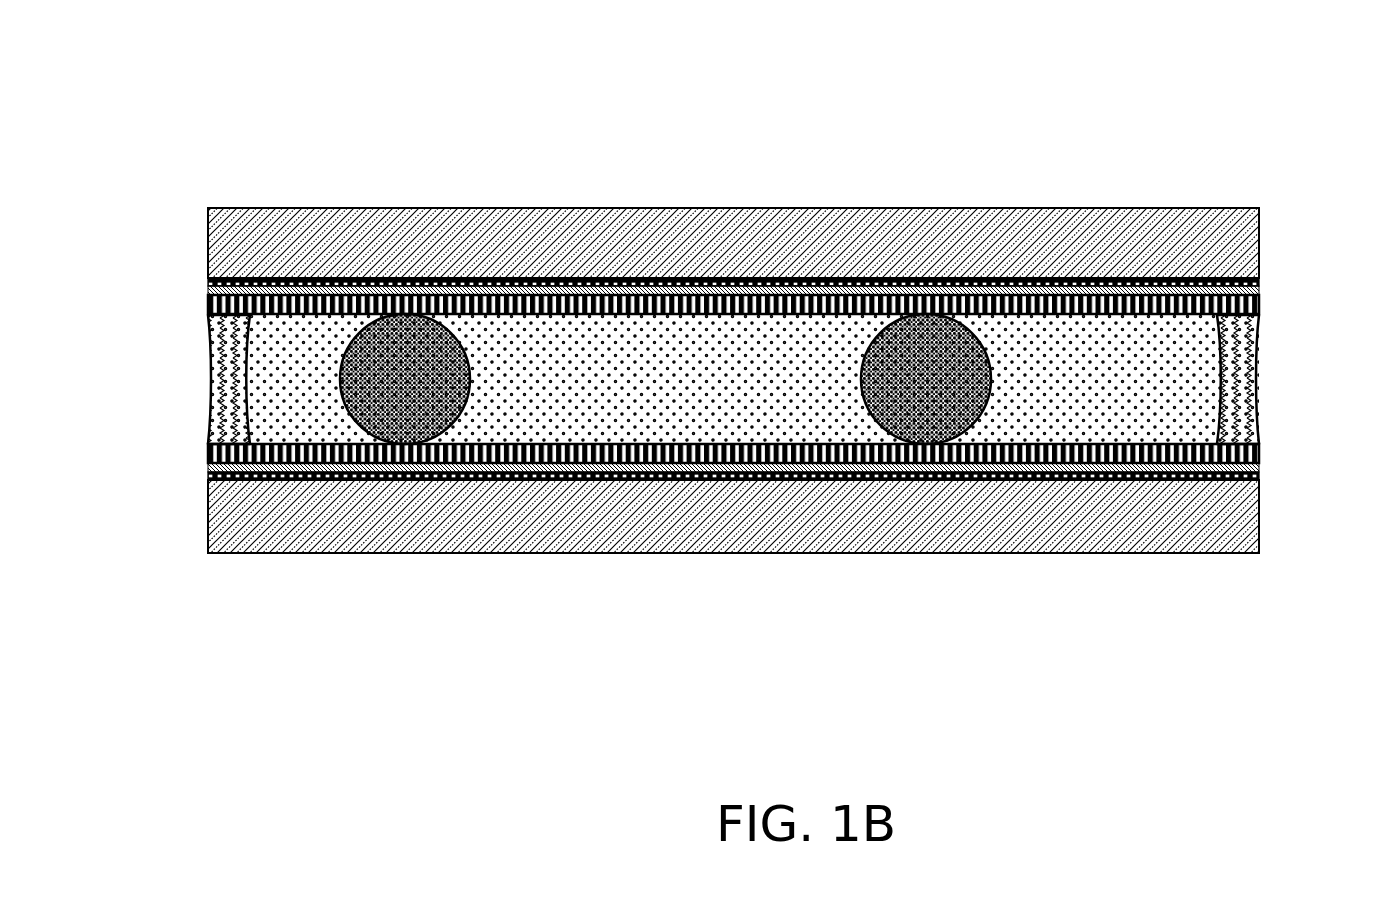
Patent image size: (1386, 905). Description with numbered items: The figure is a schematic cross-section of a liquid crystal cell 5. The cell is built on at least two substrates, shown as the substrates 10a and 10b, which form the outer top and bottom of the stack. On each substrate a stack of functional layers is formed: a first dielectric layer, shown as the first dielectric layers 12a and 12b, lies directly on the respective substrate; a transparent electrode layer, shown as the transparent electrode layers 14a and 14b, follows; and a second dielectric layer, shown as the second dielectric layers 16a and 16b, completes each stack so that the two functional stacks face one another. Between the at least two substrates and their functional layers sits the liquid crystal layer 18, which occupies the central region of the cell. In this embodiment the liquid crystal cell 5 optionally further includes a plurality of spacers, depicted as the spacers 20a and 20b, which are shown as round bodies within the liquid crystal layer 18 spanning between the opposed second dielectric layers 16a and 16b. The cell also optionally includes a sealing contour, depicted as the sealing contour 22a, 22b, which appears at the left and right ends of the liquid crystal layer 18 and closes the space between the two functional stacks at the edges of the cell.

The liquid crystal cell 5 is at (1323, 95).
The substrate 10a is at (853, 237).
The substrate 10b is at (630, 507).
The first dielectric layer 12a is at (283, 274).
The first dielectric layer 12b is at (390, 470).
The transparent electrode layer 14a is at (873, 283).
The transparent electrode layer 14b is at (900, 462).
The second dielectric layer 16a is at (1050, 300).
The second dielectric layer 16b is at (1162, 452).
The liquid crystal layer 18 is at (727, 365).
The spacer 20a is at (402, 382).
The spacer 20b is at (932, 382).
The sealing contour 22a is at (223, 342).
The sealing contour 22b is at (1245, 382).